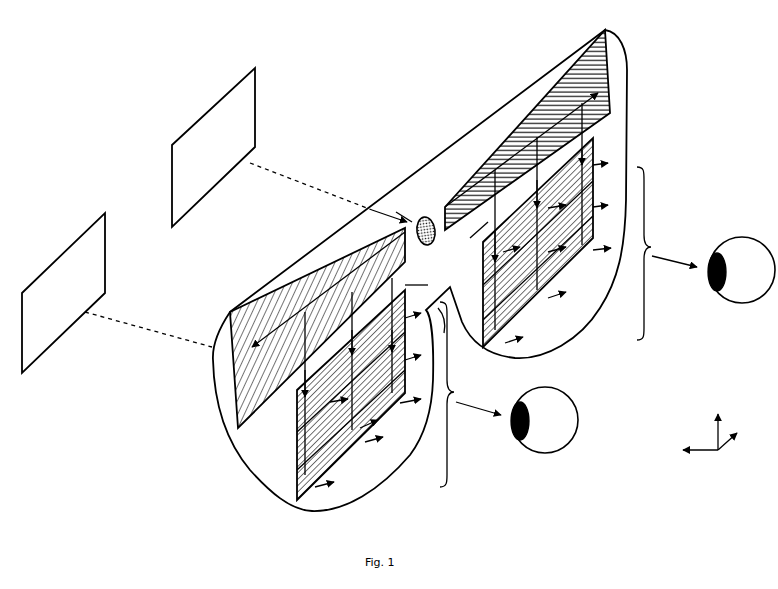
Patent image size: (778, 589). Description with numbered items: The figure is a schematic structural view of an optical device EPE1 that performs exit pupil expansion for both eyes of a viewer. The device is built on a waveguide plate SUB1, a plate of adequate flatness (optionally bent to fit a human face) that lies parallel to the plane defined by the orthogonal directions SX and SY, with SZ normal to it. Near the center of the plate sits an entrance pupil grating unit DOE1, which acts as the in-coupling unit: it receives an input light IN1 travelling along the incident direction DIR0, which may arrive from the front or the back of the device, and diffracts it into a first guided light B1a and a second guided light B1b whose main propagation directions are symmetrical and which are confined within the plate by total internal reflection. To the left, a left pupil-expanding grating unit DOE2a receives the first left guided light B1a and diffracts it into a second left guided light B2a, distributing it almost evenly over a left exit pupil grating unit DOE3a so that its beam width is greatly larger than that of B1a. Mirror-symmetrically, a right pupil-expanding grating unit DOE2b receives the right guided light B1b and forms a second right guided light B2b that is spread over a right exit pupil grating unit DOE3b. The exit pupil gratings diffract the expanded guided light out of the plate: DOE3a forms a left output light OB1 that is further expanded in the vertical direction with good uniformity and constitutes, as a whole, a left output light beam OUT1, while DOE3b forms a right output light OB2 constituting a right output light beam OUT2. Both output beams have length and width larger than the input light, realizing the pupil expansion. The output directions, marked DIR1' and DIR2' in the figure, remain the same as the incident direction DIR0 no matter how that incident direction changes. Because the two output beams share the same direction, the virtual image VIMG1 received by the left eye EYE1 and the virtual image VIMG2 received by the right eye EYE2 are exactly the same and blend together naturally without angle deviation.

The waveguide plate SUB1 is at (470, 128).
The virtual image VIMG1 is at (98, 198).
The virtual image VIMG2 is at (250, 55).
The optical device EPE1 is at (407, 136).
The direction of the incident light beam DIR0 is at (346, 204).
The input light IN1 is at (398, 210).
The entrance pupil grating unit DOE1 is at (425, 217).
The left pupil-expanding grating unit DOE2a is at (256, 299).
The right pupil-expanding grating unit DOE2b is at (587, 54).
The left exit pupil grating unit DOE3a is at (296, 430).
The right exit pupil grating unit DOE3b is at (605, 148).
The first guided light B1a is at (352, 271).
The second guided light B1b is at (462, 188).
The second left guided light B2a is at (405, 285).
The second right guided light B2b is at (490, 224).
The left output light OB1 is at (366, 406).
The right output light OB2 is at (554, 258).
The left output light beam OUT1 is at (466, 394).
The right output light beam OUT2 is at (663, 253).
The first output direction DIR1' is at (478, 427).
The second output direction DIR2' is at (674, 280).
The left eye EYE1 is at (545, 455).
The right eye EYE2 is at (742, 304).
The direction SX is at (739, 436).
The direction SY is at (718, 422).
The direction SZ is at (685, 451).